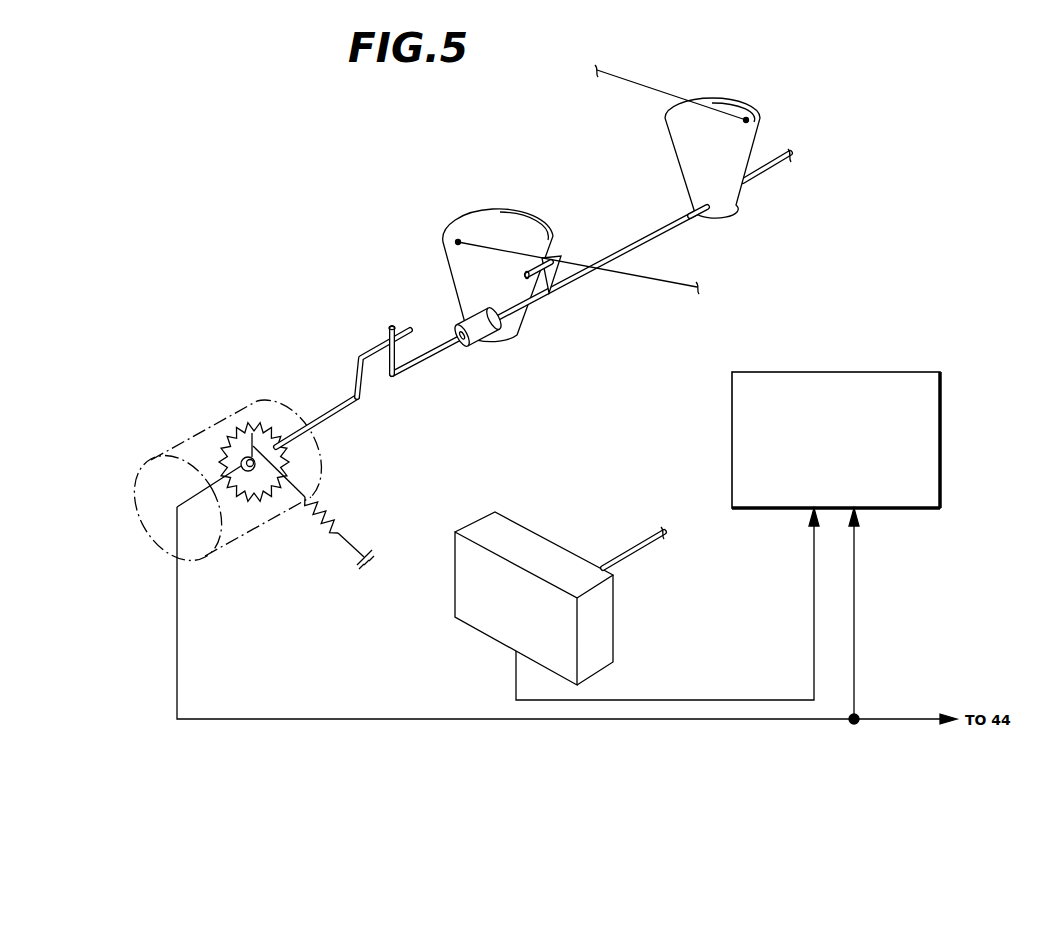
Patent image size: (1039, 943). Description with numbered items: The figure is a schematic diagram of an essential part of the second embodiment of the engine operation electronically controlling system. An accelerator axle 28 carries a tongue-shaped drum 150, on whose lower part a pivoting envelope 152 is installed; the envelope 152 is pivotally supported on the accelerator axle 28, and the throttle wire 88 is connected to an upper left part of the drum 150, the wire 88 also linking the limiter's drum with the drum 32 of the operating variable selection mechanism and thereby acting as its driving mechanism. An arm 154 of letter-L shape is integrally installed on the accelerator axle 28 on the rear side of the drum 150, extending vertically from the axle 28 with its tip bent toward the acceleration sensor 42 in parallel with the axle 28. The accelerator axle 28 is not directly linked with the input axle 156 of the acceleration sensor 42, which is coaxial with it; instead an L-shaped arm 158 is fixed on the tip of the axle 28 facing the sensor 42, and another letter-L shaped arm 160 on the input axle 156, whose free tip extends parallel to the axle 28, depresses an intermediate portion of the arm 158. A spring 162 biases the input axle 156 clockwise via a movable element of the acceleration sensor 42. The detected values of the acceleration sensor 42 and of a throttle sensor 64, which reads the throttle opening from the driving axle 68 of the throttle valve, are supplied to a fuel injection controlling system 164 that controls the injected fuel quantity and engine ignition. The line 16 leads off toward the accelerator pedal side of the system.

The cable to element 12 16 is at (661, 90).
The tongue-shaped drum 32 is at (745, 137).
The accelerator axle 28 is at (623, 246).
The throttle wire 88 is at (669, 283).
The arm 154 is at (558, 281).
The tongue-shaped drum 150 is at (518, 294).
The pivoting envelope 152 is at (489, 338).
The L-shaped arm 158 is at (392, 324).
The letter-L shaped arm 160 is at (362, 356).
The input axle 156 is at (343, 412).
The spring 162 is at (331, 531).
The acceleration sensor 42 is at (201, 427).
The throttle sensor 64 is at (524, 537).
The driving axle 68 is at (641, 537).
The fuel injection controlling system 164 is at (870, 371).